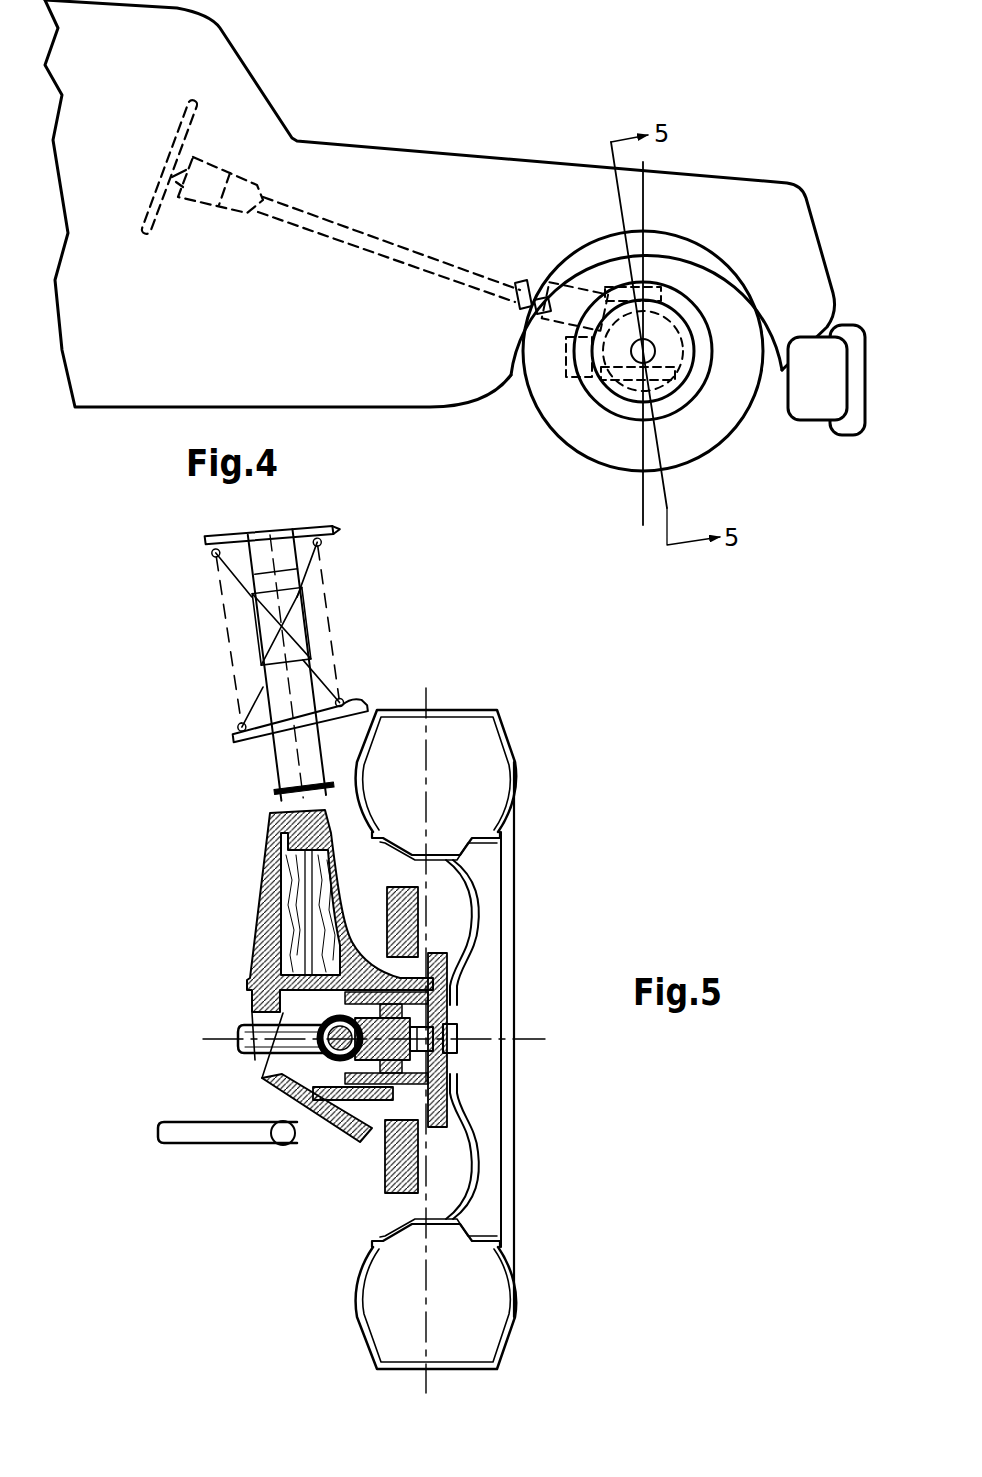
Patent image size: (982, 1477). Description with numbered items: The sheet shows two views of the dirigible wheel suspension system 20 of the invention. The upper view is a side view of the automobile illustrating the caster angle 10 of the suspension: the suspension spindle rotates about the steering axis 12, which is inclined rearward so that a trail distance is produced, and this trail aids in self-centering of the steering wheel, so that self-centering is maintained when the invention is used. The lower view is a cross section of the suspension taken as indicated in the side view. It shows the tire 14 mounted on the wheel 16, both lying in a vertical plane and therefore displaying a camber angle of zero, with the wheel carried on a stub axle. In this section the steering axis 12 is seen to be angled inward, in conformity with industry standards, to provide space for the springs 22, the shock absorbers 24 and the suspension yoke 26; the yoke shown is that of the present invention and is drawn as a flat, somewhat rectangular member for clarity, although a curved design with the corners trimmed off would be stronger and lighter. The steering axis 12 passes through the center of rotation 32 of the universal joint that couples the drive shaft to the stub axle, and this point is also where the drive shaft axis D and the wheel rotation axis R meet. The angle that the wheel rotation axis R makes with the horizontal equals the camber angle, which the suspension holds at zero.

In FIG. 4, the caster angle 10 is at (683, 182).
In FIG. 4, the steering axis 12 is at (620, 213).
In FIG. 5, the steering axis 12 is at (332, 558).
In FIG. 5, the tire 14 is at (515, 731).
In FIG. 5, the wheel 16 is at (504, 881).
In FIG. 4, the dirigible wheel suspension system 20 is at (667, 373).
In FIG. 5, the springs 22 is at (325, 594).
In FIG. 5, the shock absorbers 24 is at (287, 753).
In FIG. 5, the suspension yoke 26 is at (257, 903).
In FIG. 5, the center of rotation 32 is at (337, 1048).
In FIG. 5, the drive shaft axis D is at (210, 1030).
In FIG. 5, the wheel rotation axis R is at (547, 1043).